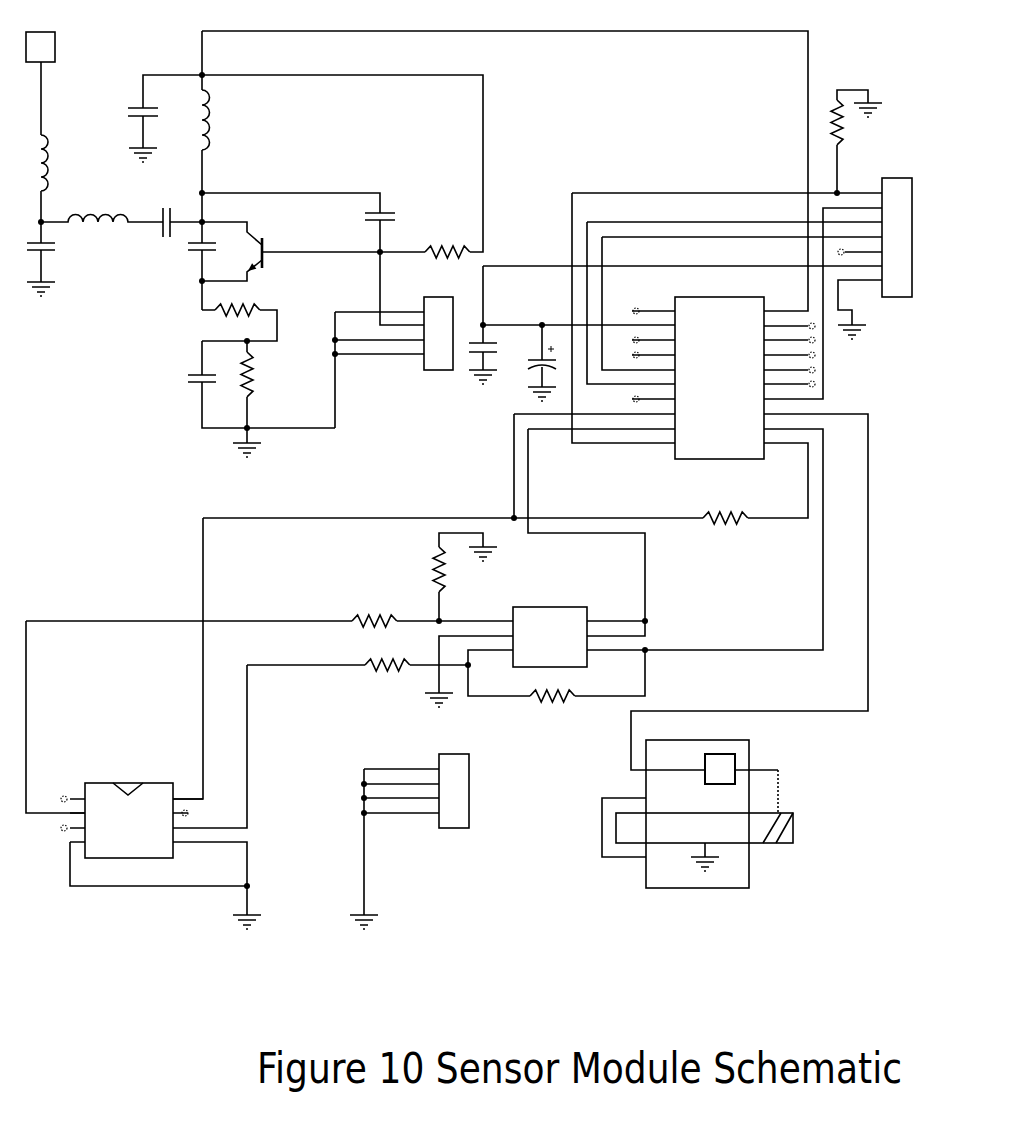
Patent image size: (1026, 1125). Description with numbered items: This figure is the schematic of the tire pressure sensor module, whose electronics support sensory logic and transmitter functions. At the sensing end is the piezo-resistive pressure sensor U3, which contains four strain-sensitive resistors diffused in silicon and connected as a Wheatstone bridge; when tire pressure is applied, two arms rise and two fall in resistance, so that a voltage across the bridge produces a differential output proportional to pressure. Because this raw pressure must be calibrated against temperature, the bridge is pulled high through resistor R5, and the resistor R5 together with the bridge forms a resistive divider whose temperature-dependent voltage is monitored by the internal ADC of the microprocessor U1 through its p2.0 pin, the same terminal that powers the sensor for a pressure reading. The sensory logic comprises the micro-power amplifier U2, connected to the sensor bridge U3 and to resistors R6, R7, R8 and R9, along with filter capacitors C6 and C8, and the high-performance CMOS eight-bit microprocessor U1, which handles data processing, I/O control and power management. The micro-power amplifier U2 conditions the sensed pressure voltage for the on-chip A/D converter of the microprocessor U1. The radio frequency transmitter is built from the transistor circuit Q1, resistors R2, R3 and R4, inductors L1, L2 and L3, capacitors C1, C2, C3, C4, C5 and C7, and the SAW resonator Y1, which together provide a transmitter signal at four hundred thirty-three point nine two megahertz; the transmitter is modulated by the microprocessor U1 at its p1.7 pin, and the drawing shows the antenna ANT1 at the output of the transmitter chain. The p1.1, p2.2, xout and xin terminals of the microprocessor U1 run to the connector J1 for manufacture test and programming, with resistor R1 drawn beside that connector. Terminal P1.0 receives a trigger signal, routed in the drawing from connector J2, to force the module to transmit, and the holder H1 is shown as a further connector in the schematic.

The antenna ANT1 is at (41, 74).
The inductor L1 is at (223, 120).
The inductor L2 is at (29, 189).
The inductor L3 is at (102, 209).
The capacitor C1 is at (150, 118).
The capacitor C2 is at (178, 214).
The capacitor C3 is at (313, 259).
The capacitor C4 is at (31, 268).
The capacitor C5 is at (191, 247).
The filter capacitor C6 is at (542, 344).
The capacitor C7 is at (261, 384).
The filter capacitor C8 is at (572, 325).
The transistor circuit Q1 is at (291, 251).
The resistor R1 is at (856, 141).
The resistor R2 is at (342, 166).
The resistor R3 is at (239, 313).
The resistor R4 is at (265, 384).
The resistor R5 is at (475, 508).
The resistor R6 is at (446, 577).
The resistor R7 is at (269, 613).
The resistor R8 is at (357, 674).
The resistor R9 is at (587, 687).
The SAW resonator Y1 is at (393, 362).
The microprocessor U1 is at (723, 385).
The micro-power amplifier U2 is at (511, 637).
The piezo-resistive pressure sensor U3 is at (161, 836).
The connector J1 is at (875, 258).
The trigger connector (valve stem) J2 is at (712, 814).
The battery holder H1 is at (453, 841).